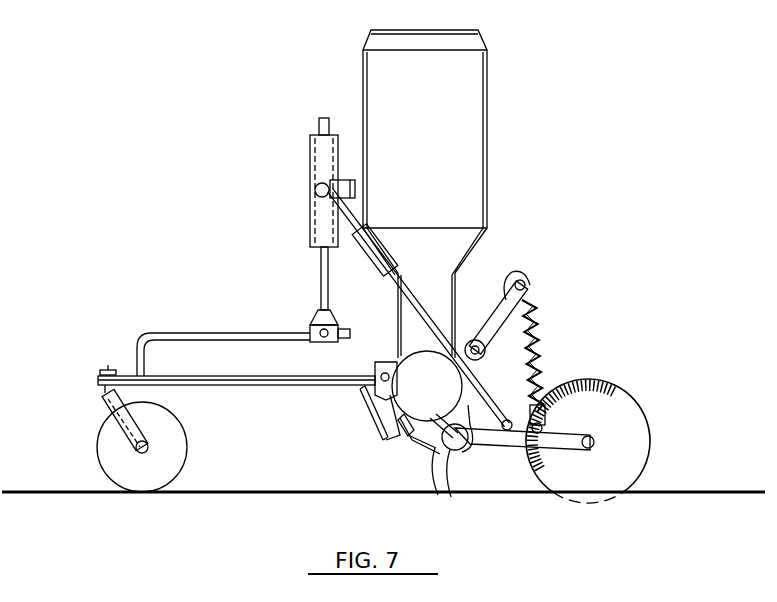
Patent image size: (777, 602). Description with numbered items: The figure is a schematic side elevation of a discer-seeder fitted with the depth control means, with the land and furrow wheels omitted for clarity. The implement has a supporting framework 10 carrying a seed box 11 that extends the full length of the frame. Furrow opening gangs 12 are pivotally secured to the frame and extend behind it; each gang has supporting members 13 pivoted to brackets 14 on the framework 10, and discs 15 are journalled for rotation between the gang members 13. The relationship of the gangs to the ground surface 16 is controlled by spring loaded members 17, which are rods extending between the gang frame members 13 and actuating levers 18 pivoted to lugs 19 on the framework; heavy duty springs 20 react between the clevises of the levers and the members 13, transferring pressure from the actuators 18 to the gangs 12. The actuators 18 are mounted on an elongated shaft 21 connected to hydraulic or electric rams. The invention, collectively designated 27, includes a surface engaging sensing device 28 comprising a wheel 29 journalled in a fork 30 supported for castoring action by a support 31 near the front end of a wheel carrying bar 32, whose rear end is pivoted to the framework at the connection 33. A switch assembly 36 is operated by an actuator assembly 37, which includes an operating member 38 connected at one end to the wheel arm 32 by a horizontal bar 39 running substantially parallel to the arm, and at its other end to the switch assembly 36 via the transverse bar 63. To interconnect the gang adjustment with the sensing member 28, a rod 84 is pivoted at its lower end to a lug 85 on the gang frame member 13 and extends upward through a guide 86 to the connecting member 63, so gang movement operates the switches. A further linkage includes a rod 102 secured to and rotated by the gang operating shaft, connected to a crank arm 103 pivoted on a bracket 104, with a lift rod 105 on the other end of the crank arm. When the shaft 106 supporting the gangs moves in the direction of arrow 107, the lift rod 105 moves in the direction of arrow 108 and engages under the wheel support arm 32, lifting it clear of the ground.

The supporting framework 10 is at (443, 377).
The seed box 11 is at (443, 112).
The gang 12 is at (525, 452).
The supporting member 13 is at (553, 446).
The bracket 14 is at (458, 408).
The disc 15 is at (628, 416).
The ground surface 16 is at (262, 490).
The spring loaded member 17 is at (560, 362).
The actuating lever 18 is at (502, 300).
The lug 19 is at (480, 358).
The heavy duty spring 20 is at (545, 338).
The elongated shaft 21 is at (477, 340).
The depth control invention 27 is at (253, 215).
The surface engaging sensing device 28 is at (102, 438).
The wheel 29 is at (118, 456).
The fork 30 is at (120, 426).
The support 31 is at (113, 370).
The wheel carrying bar 32 is at (238, 387).
The pivot connection 33 is at (378, 376).
The switch assembly 36 is at (297, 215).
The actuator assembly 37 is at (258, 278).
The operating member 38 is at (322, 120).
The horizontal bar 39 is at (222, 333).
The transverse bar 63 is at (352, 183).
The rod 84 is at (419, 307).
The lug 85 is at (512, 421).
The guide 86 is at (382, 266).
The rod 102 is at (436, 480).
The crank arm 103 is at (403, 440).
The bracket 104 is at (412, 432).
The lift rod 105 is at (376, 428).
The shaft 106 is at (447, 482).
The arrow 107 is at (470, 443).
The arrow 108 is at (365, 420).